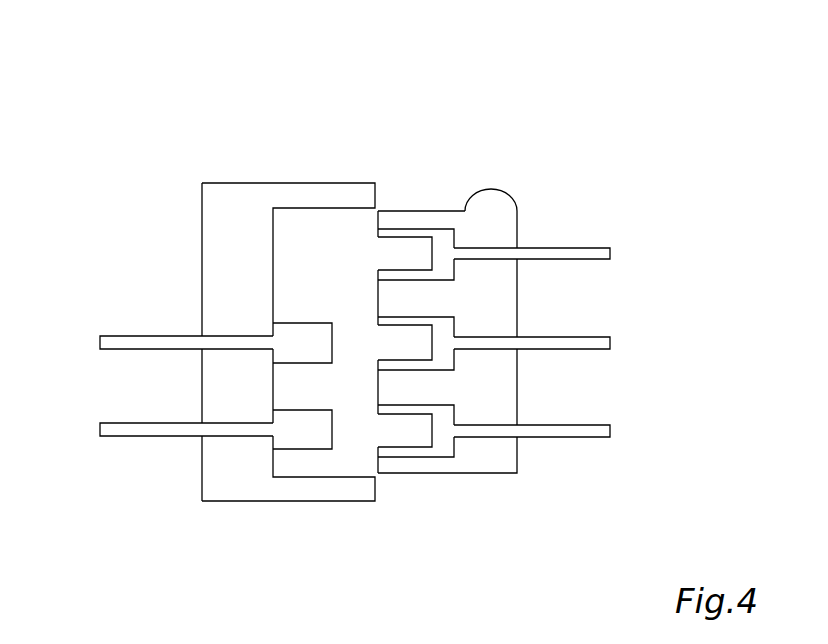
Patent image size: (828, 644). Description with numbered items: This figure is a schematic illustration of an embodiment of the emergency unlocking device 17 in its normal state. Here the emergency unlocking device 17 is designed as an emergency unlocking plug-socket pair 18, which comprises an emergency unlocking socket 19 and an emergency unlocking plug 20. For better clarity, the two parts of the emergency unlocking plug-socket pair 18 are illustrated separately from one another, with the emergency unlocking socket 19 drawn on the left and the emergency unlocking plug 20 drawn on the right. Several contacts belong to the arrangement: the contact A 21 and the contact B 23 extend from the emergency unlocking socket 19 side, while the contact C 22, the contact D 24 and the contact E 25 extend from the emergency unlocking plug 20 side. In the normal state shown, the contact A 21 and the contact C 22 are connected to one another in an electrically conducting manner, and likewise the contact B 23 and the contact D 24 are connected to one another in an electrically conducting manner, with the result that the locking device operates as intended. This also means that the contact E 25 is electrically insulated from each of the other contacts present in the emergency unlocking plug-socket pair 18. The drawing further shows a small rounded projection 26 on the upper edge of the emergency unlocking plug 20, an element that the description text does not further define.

The emergency unlocking device 17 is at (127, 133).
The emergency unlocking plug-socket pair 18 is at (195, 158).
The emergency unlocking socket 19 is at (199, 506).
The emergency unlocking plug 20 is at (519, 477).
The contact A 21 is at (160, 337).
The contact C 22 is at (567, 337).
The contact B 23 is at (158, 437).
The contact D 24 is at (560, 437).
The contact E 25 is at (560, 248).
The projection 26 is at (490, 190).